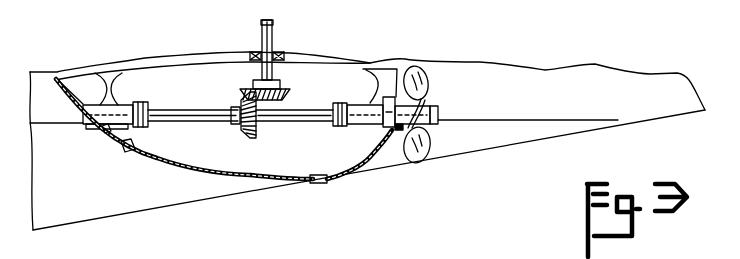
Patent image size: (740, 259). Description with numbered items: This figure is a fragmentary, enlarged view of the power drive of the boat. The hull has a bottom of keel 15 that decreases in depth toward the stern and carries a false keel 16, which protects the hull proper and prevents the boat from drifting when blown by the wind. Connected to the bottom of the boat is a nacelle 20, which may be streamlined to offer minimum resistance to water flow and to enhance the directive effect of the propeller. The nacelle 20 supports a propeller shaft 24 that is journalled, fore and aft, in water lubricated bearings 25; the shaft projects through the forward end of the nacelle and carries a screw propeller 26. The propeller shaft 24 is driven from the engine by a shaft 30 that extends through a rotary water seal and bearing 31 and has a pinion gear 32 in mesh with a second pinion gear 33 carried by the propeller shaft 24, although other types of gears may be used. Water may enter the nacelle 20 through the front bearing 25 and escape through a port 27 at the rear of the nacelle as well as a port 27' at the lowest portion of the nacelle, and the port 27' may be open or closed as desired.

The bottom of keel 15 is at (63, 124).
The false keel 16 is at (62, 226).
The nacelle 20 is at (186, 169).
The propeller shaft 24 is at (196, 111).
The water lubricated bearing 25 is at (143, 128).
The screw propeller 26 is at (432, 85).
The port 27 is at (118, 150).
The port 27' is at (335, 188).
The shaft 30 is at (273, 26).
The rotary water seal and bearing 31 is at (284, 52).
The pinion gear 32 is at (292, 91).
The second pinion gear 33 is at (256, 133).